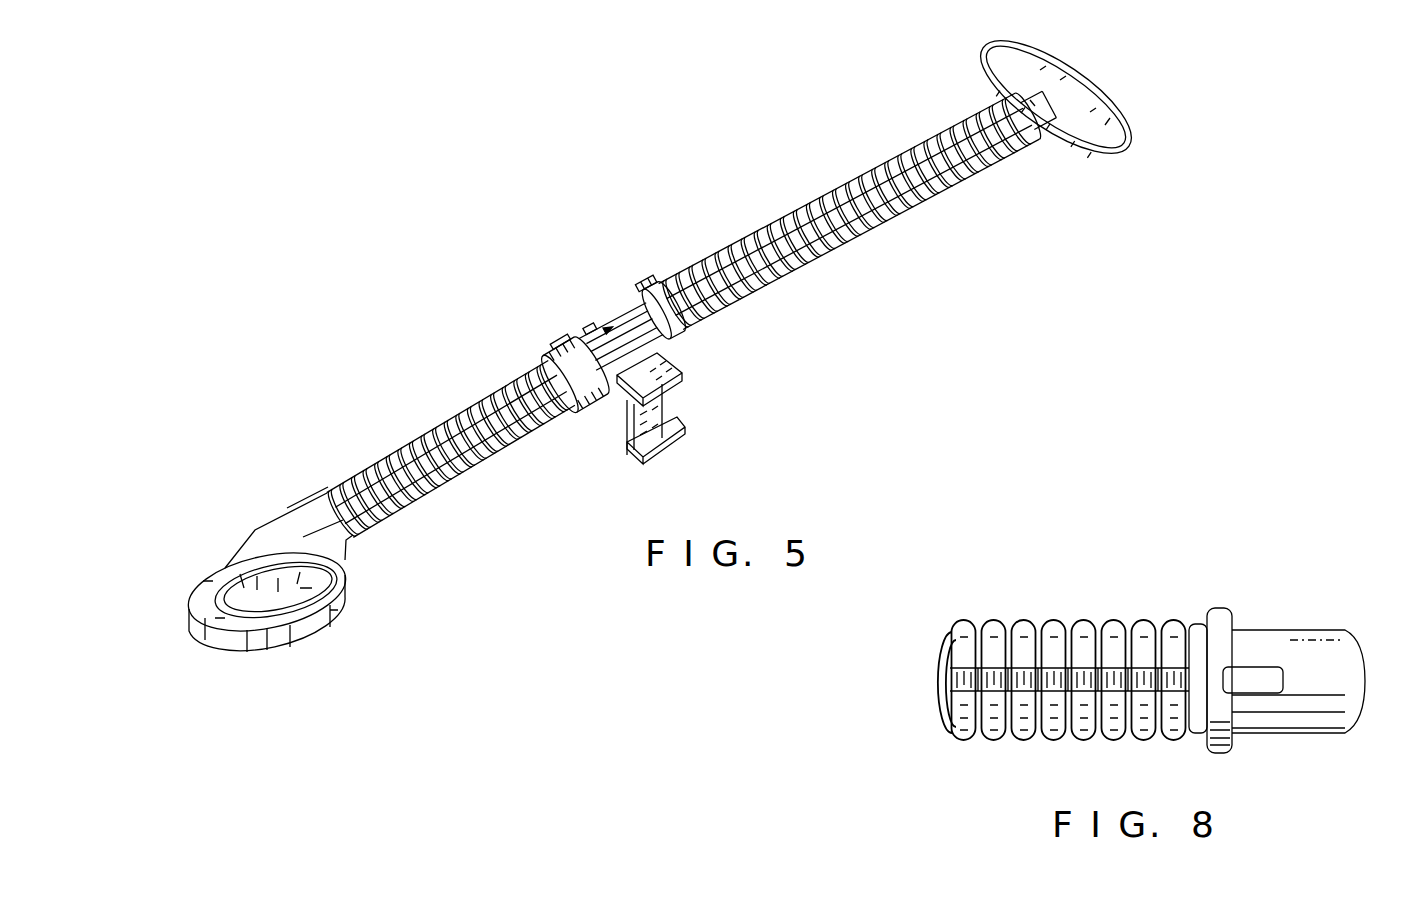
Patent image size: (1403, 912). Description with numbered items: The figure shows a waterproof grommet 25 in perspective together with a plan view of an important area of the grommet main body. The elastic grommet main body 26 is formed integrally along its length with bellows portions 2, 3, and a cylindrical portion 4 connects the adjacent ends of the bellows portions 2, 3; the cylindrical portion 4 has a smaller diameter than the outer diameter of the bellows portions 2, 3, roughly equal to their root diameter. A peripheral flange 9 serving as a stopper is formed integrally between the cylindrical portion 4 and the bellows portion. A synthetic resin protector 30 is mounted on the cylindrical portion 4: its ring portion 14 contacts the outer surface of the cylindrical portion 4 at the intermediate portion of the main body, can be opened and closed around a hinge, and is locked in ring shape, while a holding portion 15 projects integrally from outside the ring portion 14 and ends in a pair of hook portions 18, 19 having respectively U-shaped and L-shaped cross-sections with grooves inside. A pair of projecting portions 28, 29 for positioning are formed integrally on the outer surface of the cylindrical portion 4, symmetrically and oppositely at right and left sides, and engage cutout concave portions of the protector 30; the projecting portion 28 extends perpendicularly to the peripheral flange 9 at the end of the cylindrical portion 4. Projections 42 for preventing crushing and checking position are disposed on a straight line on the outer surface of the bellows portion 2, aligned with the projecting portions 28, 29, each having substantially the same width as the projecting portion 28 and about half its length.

In FIG. 5, the bellows portion 2 is at (466, 465).
In FIG. 8, the bellows portion 2 is at (1053, 632).
In FIG. 5, the bellows portion 3 is at (800, 268).
In FIG. 8, the cylindrical portion 4 is at (1302, 713).
In FIG. 8, the peripheral flange 9 is at (1215, 745).
In FIG. 5, the ring portion 14 is at (684, 337).
In FIG. 5, the holding portion 15 is at (624, 441).
In FIG. 5, the hook portion 18 is at (667, 441).
In FIG. 5, the hook portion 19 is at (684, 385).
In FIG. 5, the waterproof grommet 25 is at (628, 276).
In FIG. 5, the elastic grommet main body 26 is at (703, 244).
In FIG. 5, the projecting portion 28 is at (578, 342).
In FIG. 8, the projecting portion 28 is at (1262, 672).
In FIG. 5, the projecting portion 29 is at (660, 292).
In FIG. 5, the synthetic resin protector 30 is at (603, 310).
In FIG. 8, the projections for preventing crushing and checking position 42 is at (1145, 672).